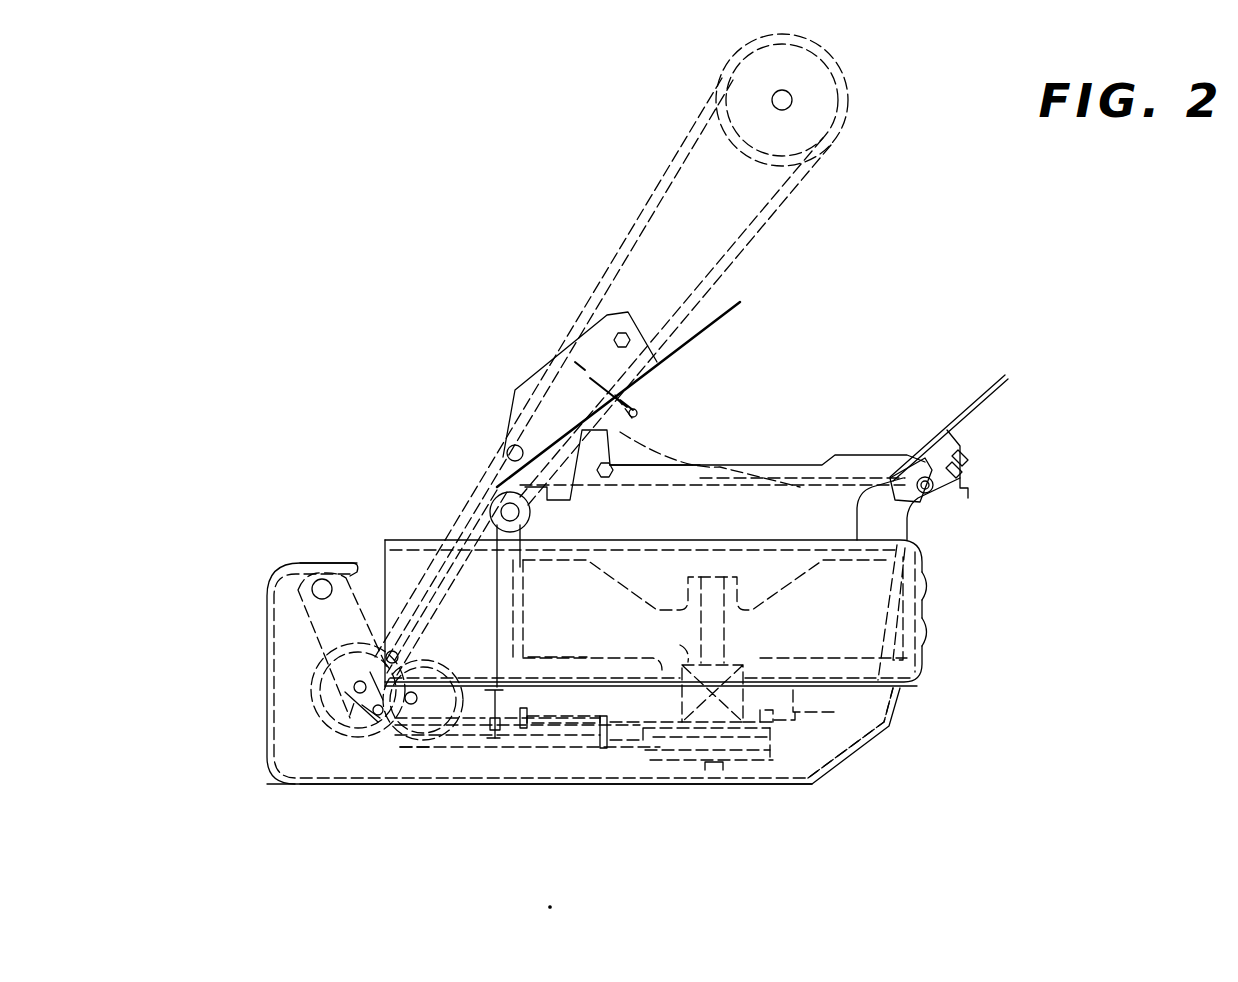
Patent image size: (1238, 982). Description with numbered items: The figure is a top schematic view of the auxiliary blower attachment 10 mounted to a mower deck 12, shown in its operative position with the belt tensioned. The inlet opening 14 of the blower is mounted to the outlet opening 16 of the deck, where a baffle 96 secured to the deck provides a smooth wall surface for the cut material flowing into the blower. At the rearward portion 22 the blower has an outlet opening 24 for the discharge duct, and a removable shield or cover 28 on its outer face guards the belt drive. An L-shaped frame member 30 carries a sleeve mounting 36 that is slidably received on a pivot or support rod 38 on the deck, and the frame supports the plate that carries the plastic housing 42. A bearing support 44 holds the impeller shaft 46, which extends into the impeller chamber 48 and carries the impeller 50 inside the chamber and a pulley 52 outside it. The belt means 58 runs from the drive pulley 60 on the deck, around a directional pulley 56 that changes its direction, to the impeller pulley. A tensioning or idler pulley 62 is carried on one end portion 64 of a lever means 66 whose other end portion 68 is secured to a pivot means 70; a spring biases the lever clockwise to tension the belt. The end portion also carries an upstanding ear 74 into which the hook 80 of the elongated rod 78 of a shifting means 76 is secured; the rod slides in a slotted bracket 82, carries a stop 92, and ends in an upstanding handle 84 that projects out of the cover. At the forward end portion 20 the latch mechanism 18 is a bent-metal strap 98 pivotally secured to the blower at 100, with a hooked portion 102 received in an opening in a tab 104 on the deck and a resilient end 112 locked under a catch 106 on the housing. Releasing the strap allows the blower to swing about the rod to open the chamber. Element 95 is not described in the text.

The auxiliary blower attachment 10 is at (687, 843).
The mower deck 12 is at (828, 376).
The inlet opening 14 is at (775, 465).
The outlet opening 16 is at (712, 490).
The latch mechanism 18 is at (955, 505).
The forward end portion 20 is at (930, 685).
The rearward portion 22 is at (264, 617).
The outlet opening 24 is at (383, 562).
The shield or cover 28 is at (813, 786).
The L-shaped frame member 30 is at (492, 571).
The sleeve mounting 36 is at (480, 508).
The pivot or support rod 38 is at (530, 516).
The plastic housing 42 is at (930, 657).
The bearing support 44 is at (729, 671).
The impeller shaft 46 is at (685, 633).
The impeller chamber 48 is at (758, 580).
The impeller 50 is at (932, 622).
The pulley 52 is at (775, 763).
The directional pulley 56 is at (428, 745).
The belt means 58 is at (688, 139).
The drive pulley 60 is at (837, 68).
The tensioning or idler pulley 62 is at (312, 700).
The end portion 64 is at (342, 712).
The lever means 66 is at (306, 645).
The other end portion 68 is at (283, 597).
The pivot means 70 is at (319, 561).
The upstanding ear 74 is at (350, 715).
The shifting means 76 is at (540, 688).
The elongated rod 78 is at (578, 724).
The hook 80 is at (437, 660).
The slotted bracket 82 is at (470, 676).
The upstanding handle 84 is at (607, 748).
The stop 92 is at (525, 730).
The spring 95 is at (495, 740).
The baffle 96 is at (645, 418).
The strap 98 is at (932, 582).
The pivot 100 is at (935, 452).
The hooked portion 102 is at (972, 490).
The tab 104 is at (968, 458).
The catch 106 is at (850, 700).
The resilient end 112 is at (848, 718).